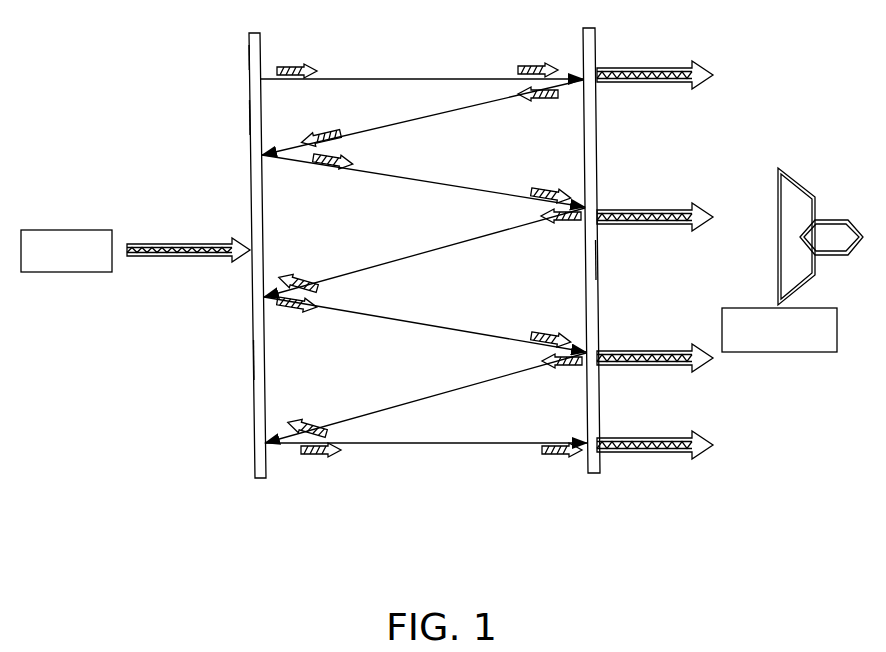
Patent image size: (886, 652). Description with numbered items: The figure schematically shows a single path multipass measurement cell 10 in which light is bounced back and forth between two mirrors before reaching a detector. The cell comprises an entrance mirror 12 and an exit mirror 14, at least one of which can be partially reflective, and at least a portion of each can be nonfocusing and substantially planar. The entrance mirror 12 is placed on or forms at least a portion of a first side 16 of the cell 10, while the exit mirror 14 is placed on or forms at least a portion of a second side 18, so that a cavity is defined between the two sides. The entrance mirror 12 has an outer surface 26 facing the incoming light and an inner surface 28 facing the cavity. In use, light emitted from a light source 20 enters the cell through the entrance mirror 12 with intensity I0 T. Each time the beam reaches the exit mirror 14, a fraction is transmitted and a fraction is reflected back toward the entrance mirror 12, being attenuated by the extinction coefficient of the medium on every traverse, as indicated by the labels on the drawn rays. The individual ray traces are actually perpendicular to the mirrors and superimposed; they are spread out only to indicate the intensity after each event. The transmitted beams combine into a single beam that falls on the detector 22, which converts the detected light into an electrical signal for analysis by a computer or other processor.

The measurement cell 10 is at (301, 522).
The entrance mirror 12 is at (258, 403).
The exit mirror 14 is at (597, 120).
The first side 16 is at (257, 60).
The second side 18 is at (597, 262).
The light source 20 is at (80, 272).
The detector 22 is at (795, 352).
The outer surface 26 is at (250, 120).
The inner surface 28 is at (259, 360).